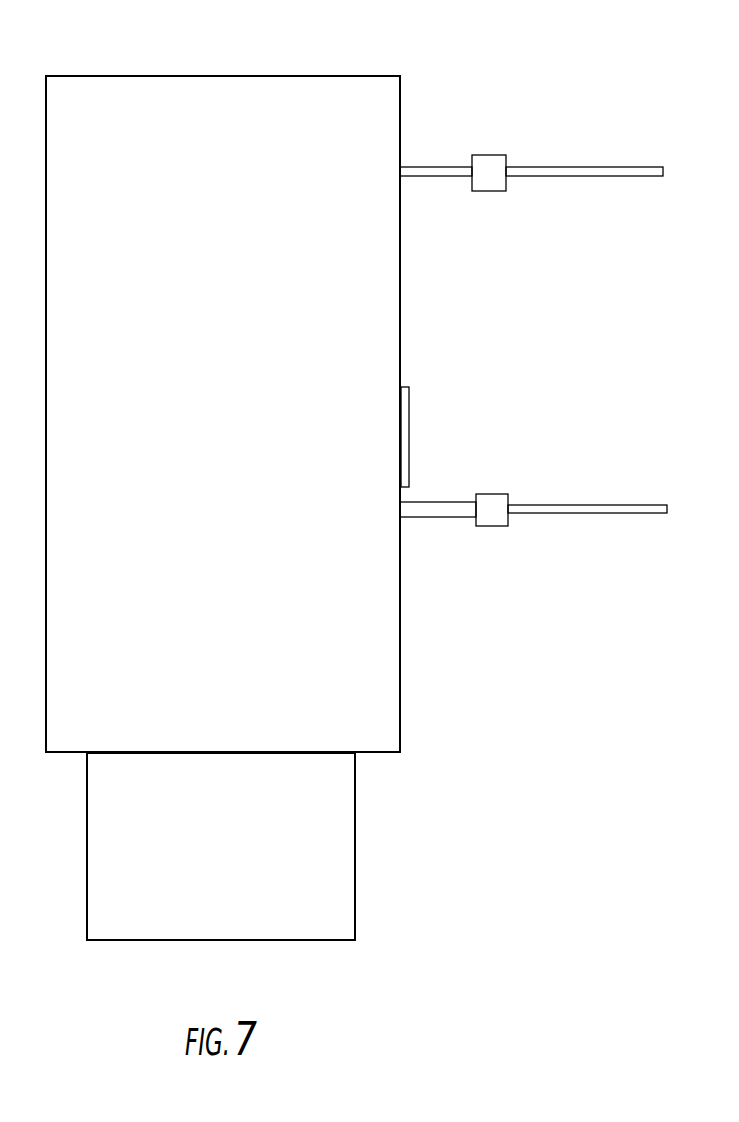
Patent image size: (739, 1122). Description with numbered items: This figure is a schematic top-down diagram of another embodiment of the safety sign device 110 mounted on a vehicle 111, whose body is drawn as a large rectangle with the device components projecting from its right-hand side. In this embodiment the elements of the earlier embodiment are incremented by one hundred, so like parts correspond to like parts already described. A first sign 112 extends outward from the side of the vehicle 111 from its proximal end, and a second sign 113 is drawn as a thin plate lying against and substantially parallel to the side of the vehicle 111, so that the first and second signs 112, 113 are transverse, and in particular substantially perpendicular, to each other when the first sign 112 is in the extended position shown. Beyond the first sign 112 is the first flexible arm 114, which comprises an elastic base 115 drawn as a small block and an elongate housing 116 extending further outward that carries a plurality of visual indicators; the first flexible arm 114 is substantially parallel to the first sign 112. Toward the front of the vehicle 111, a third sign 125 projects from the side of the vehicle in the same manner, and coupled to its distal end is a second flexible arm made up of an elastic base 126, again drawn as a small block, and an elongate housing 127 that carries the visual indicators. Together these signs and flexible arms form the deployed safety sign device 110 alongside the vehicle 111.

The safety sign device 110 is at (634, 94).
The vehicle 111 is at (358, 88).
The first sign 112 is at (437, 518).
The second sign 113 is at (409, 397).
The first flexible arm 114 is at (577, 489).
The elastic base 115 is at (493, 527).
The elongate housing 116 is at (660, 517).
The third sign 125 is at (455, 166).
The elastic base 126 is at (493, 179).
The elongate housing 127 is at (618, 172).